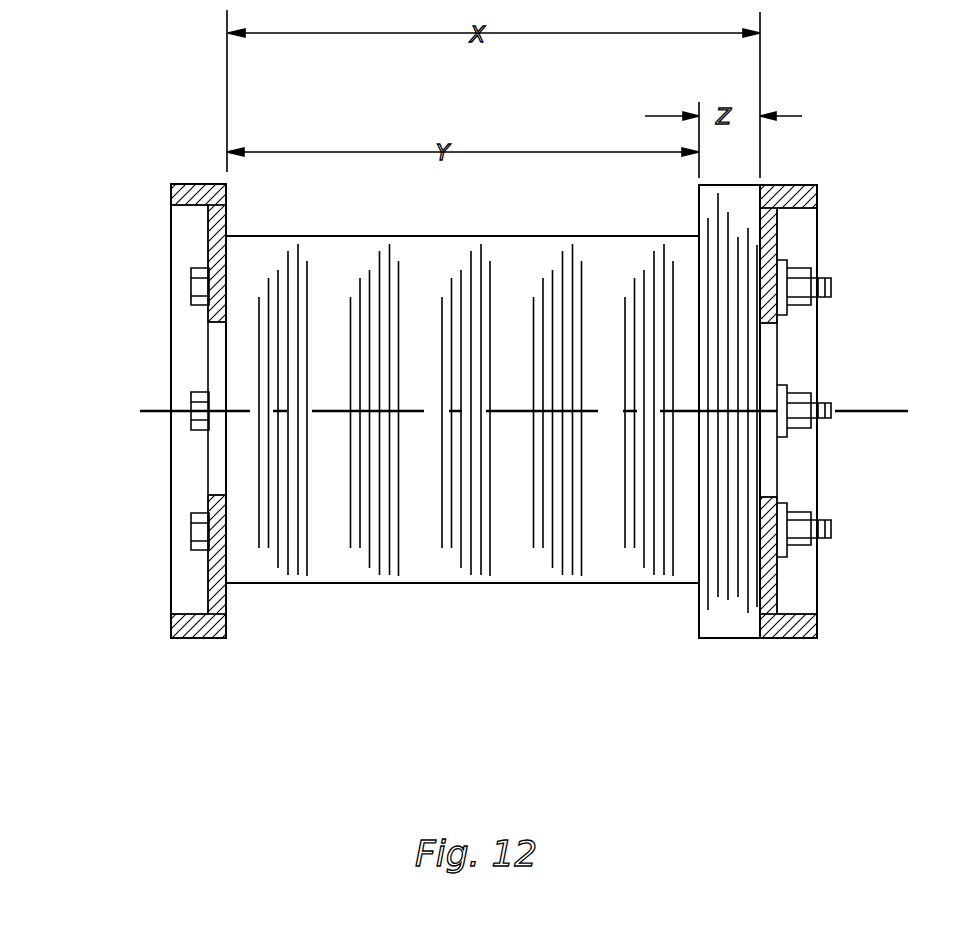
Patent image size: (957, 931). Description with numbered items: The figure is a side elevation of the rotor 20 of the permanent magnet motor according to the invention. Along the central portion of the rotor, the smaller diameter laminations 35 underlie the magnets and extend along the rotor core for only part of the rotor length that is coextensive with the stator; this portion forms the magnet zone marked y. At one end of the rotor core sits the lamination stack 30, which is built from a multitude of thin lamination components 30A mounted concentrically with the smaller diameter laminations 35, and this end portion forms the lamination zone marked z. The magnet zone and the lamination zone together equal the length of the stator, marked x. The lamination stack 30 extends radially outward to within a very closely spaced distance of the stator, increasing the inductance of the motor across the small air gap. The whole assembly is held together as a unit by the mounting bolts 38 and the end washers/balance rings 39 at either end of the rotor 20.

The rotor 20 is at (130, 234).
The end washers/balance rings 39 is at (183, 362).
The laminations 35 is at (270, 583).
The lamination stack 30 is at (694, 622).
The lamination component 30A is at (717, 603).
The mounting bolts 38 is at (796, 272).